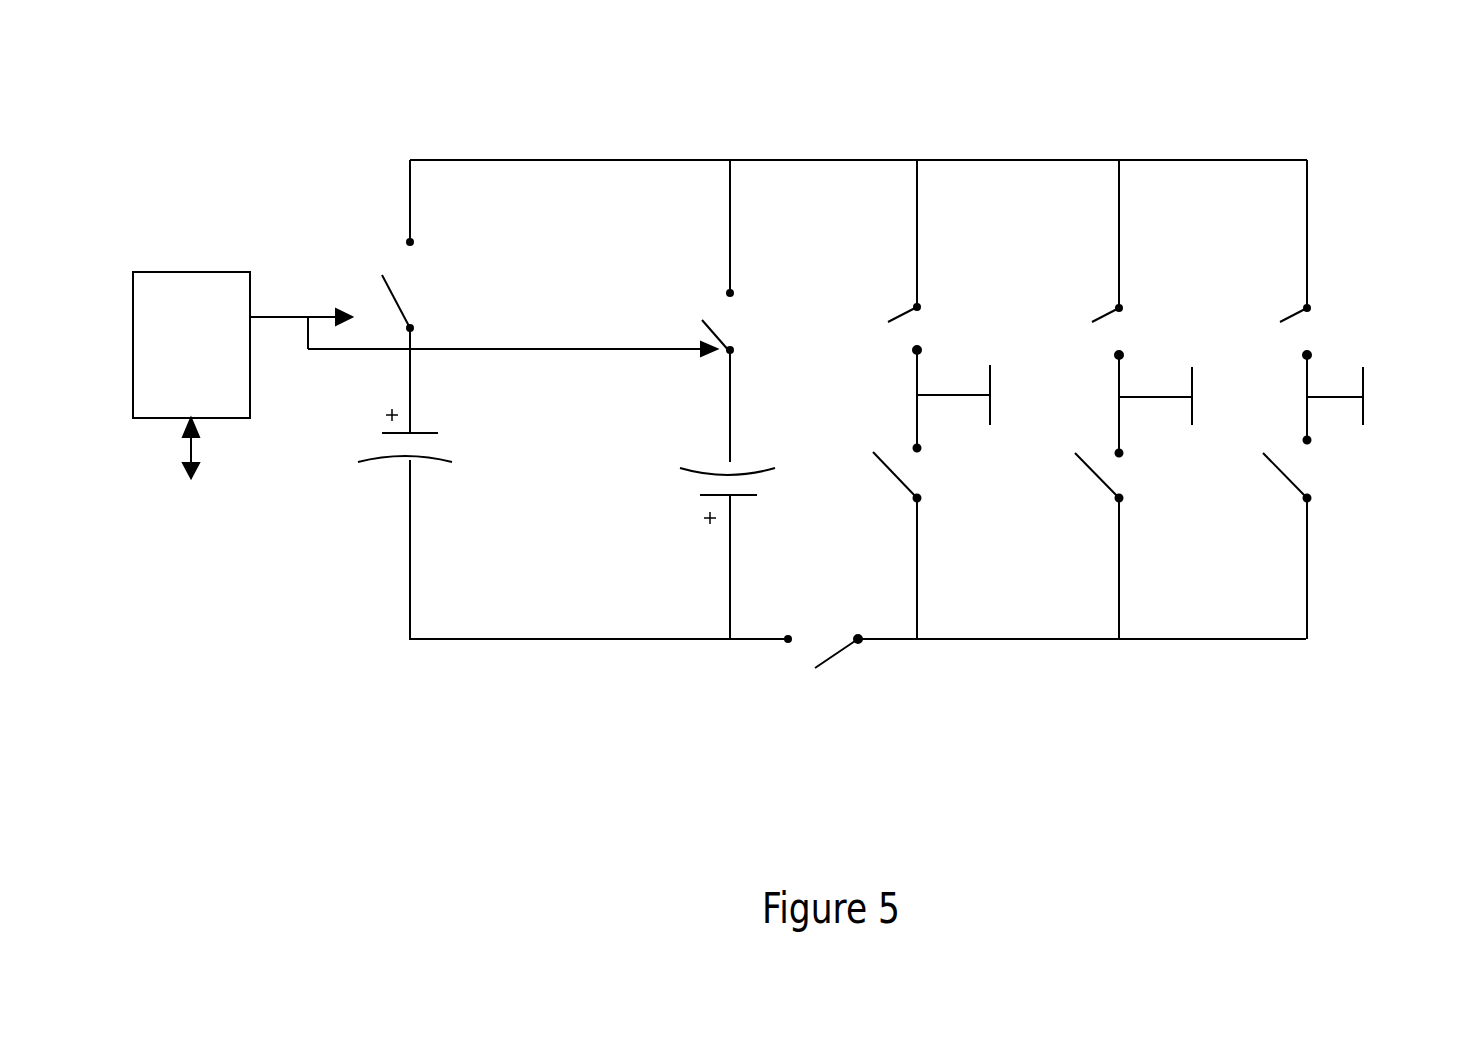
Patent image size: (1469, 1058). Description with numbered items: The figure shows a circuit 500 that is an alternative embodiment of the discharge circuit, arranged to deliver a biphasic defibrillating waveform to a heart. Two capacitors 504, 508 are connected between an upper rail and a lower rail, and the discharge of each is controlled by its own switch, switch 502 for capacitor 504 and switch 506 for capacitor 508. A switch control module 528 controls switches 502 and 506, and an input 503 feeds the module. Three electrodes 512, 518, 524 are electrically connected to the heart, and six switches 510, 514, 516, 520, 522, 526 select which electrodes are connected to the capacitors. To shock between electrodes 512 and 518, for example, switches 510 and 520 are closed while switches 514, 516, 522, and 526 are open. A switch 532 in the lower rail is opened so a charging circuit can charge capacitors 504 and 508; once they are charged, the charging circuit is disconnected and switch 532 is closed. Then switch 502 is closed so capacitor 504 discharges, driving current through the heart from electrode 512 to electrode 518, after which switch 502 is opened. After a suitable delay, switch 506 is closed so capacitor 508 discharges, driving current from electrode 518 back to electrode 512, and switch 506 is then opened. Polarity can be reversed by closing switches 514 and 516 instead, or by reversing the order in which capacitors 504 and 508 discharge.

The circuit 500 is at (270, 134).
The switch 502 is at (402, 298).
The control input 503 is at (200, 452).
The capacitor 504 is at (427, 427).
The switch 506 is at (727, 328).
The capacitor 508 is at (745, 472).
The switch 510 is at (903, 323).
The electrode 512 is at (989, 382).
The switch 514 is at (900, 473).
The switch 516 is at (1103, 325).
The electrode 518 is at (1192, 413).
The switch 520 is at (1110, 477).
The switch 522 is at (1297, 326).
The electrode 524 is at (1363, 413).
The switch 526 is at (1297, 477).
The switch control module 528 is at (170, 272).
The switch 532 is at (840, 658).